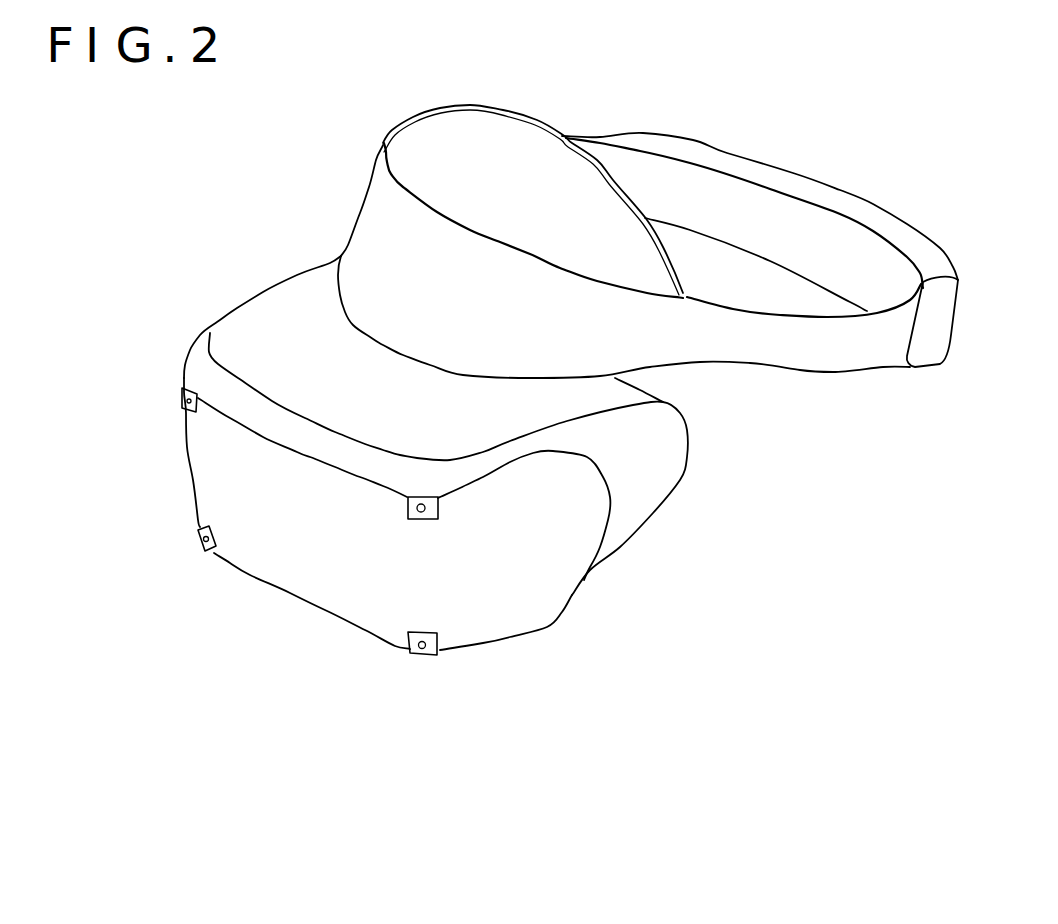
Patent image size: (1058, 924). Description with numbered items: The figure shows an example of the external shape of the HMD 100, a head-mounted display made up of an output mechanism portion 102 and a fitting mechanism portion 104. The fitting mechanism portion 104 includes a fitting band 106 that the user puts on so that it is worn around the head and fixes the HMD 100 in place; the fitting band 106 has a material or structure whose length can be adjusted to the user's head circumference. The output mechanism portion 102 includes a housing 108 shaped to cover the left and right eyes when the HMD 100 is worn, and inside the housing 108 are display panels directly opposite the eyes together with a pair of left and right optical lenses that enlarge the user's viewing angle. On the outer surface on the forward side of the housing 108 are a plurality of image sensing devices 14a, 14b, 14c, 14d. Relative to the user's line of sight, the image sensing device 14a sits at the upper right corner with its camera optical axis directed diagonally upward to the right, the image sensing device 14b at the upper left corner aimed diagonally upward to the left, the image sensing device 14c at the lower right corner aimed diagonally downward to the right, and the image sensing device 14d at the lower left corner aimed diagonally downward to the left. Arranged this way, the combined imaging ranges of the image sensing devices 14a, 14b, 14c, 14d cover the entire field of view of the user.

The HMD 100 is at (477, 813).
The output mechanism portion 102 is at (130, 403).
The fitting mechanism portion 104 is at (828, 146).
The fitting band 106 is at (820, 374).
The housing 108 is at (572, 594).
The image sensing device 14a is at (180, 397).
The image sensing device 14b is at (417, 497).
The image sensing device 14c is at (200, 533).
The image sensing device 14d is at (414, 656).